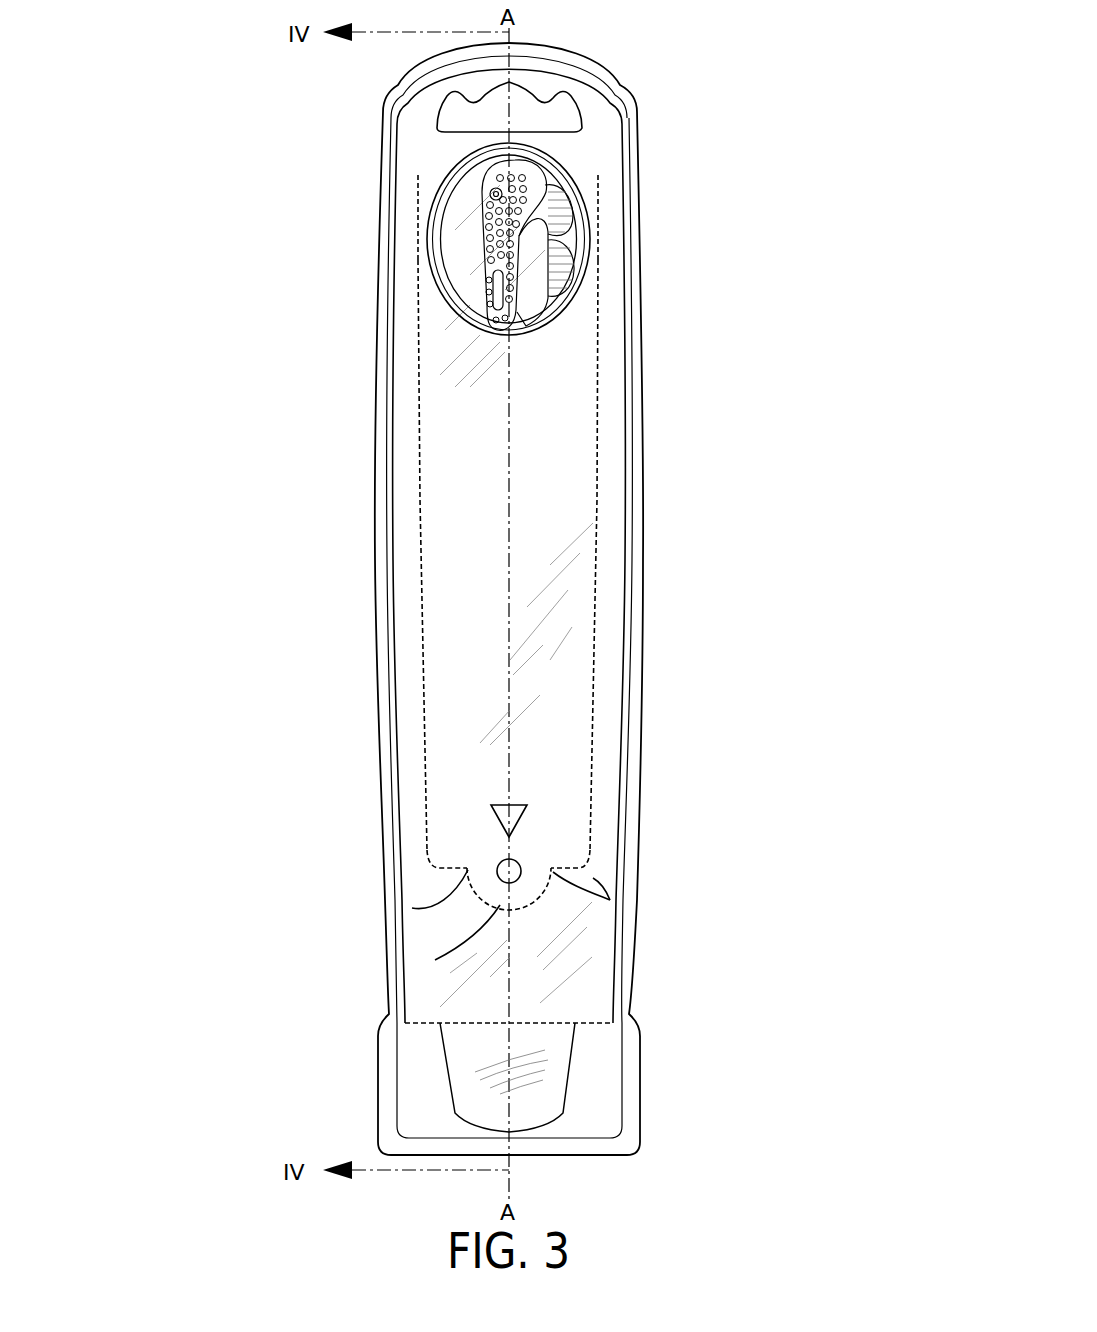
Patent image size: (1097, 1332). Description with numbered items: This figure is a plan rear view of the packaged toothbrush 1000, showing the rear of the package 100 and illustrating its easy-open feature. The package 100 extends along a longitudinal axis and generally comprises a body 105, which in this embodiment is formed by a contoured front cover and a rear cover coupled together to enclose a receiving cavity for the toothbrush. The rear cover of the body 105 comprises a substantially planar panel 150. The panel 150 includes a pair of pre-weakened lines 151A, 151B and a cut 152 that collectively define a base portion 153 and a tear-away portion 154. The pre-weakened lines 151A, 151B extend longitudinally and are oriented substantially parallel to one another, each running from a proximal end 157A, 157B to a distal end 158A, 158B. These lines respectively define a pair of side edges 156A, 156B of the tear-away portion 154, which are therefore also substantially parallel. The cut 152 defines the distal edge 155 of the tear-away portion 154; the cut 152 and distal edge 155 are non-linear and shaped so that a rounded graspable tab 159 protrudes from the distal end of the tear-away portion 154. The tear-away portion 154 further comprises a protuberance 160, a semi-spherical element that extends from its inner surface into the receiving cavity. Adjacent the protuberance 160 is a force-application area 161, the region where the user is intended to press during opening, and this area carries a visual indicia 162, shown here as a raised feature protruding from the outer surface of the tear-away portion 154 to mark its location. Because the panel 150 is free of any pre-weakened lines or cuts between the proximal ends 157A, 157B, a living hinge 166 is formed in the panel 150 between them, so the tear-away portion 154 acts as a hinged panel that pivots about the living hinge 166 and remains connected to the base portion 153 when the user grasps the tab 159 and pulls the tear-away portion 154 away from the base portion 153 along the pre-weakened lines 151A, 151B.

The packaged toothbrush 1000 is at (696, 60).
The package 100 is at (599, 633).
The body 105 is at (510, 628).
The panel 150 is at (502, 927).
The pre-weakened line 151A is at (326, 477).
The pre-weakened line 151B is at (679, 471).
The cut 152 is at (412, 908).
The base portion 153 is at (593, 878).
The tear-away portion 154 is at (493, 572).
The distal edge 155 is at (435, 960).
The side edge 156A is at (421, 640).
The side edge 156B is at (595, 585).
The proximal end 157A is at (420, 170).
The proximal end 157B is at (598, 172).
The distal end 158A is at (428, 856).
The distal end 158B is at (592, 861).
The graspable tab 159 is at (520, 897).
The protuberance 160 is at (521, 869).
The force-application area 161 is at (362, 790).
The visual indicia 162 is at (510, 818).
The living hinge 166 is at (566, 153).